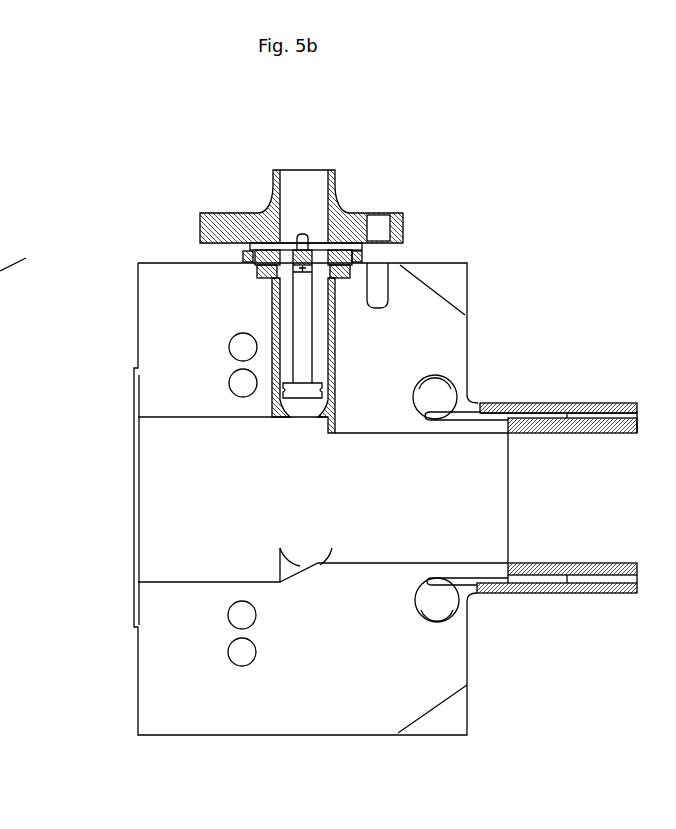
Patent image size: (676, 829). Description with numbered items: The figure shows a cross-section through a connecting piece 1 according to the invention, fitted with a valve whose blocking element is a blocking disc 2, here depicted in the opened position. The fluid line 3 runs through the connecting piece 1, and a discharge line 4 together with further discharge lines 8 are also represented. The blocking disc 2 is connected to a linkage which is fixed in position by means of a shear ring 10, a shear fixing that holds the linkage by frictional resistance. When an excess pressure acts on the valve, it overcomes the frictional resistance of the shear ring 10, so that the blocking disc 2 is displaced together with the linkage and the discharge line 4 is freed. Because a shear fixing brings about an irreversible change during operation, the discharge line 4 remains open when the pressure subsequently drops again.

The connecting piece 1 is at (158, 313).
The blocking disc 2 is at (313, 383).
The fluid line 3 is at (465, 530).
The discharge line 4 is at (300, 190).
The discharge lines 8 is at (243, 385).
The shear ring 10 is at (305, 268).